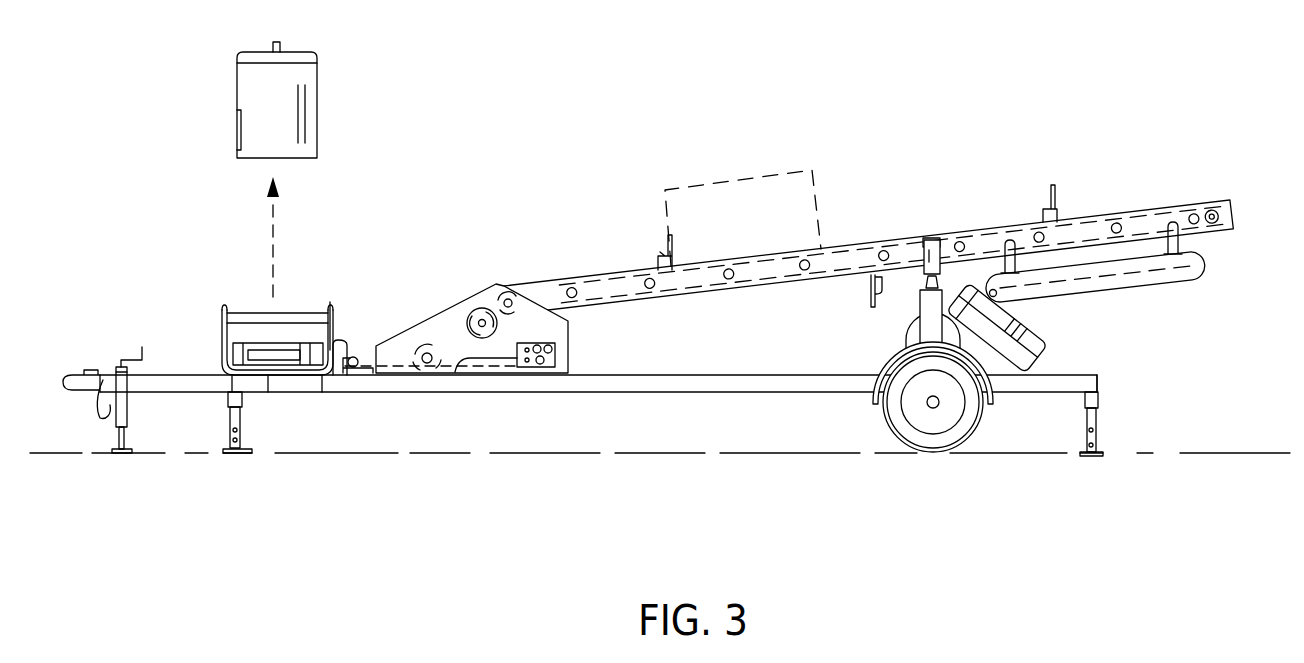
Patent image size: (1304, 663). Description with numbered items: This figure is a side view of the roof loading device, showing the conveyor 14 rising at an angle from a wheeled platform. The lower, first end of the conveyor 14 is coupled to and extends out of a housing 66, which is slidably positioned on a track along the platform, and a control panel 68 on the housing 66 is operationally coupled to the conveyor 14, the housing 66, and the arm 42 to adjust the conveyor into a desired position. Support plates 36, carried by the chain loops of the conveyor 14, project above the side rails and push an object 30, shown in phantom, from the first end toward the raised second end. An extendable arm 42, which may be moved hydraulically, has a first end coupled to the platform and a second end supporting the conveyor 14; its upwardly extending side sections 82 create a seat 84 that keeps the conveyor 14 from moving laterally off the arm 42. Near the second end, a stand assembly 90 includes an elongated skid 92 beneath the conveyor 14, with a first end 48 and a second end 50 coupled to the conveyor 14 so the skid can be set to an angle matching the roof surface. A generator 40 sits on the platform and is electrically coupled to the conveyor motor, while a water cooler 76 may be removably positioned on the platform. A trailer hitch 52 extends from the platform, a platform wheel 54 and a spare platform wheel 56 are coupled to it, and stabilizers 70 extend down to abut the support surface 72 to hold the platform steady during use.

The conveyor 14 is at (863, 238).
The object 30 is at (737, 189).
The support plate 36 is at (667, 252).
The generator 40 is at (286, 325).
The extendable arm 42 is at (920, 292).
The first end 48 is at (996, 290).
The second end 50 is at (1194, 263).
The trailer hitch 52 is at (106, 377).
The platform wheel 54 is at (933, 447).
The spare platform wheel 56 is at (1047, 360).
The housing 66 is at (440, 323).
The control panel 68 is at (522, 367).
The stabilizer 70 is at (1098, 420).
The support surface 72 is at (1213, 470).
The water cooler 76 is at (309, 97).
The side section 82 is at (933, 247).
The seat 84 is at (951, 226).
The stand assembly 90 is at (1138, 294).
The skid 92 is at (1170, 268).